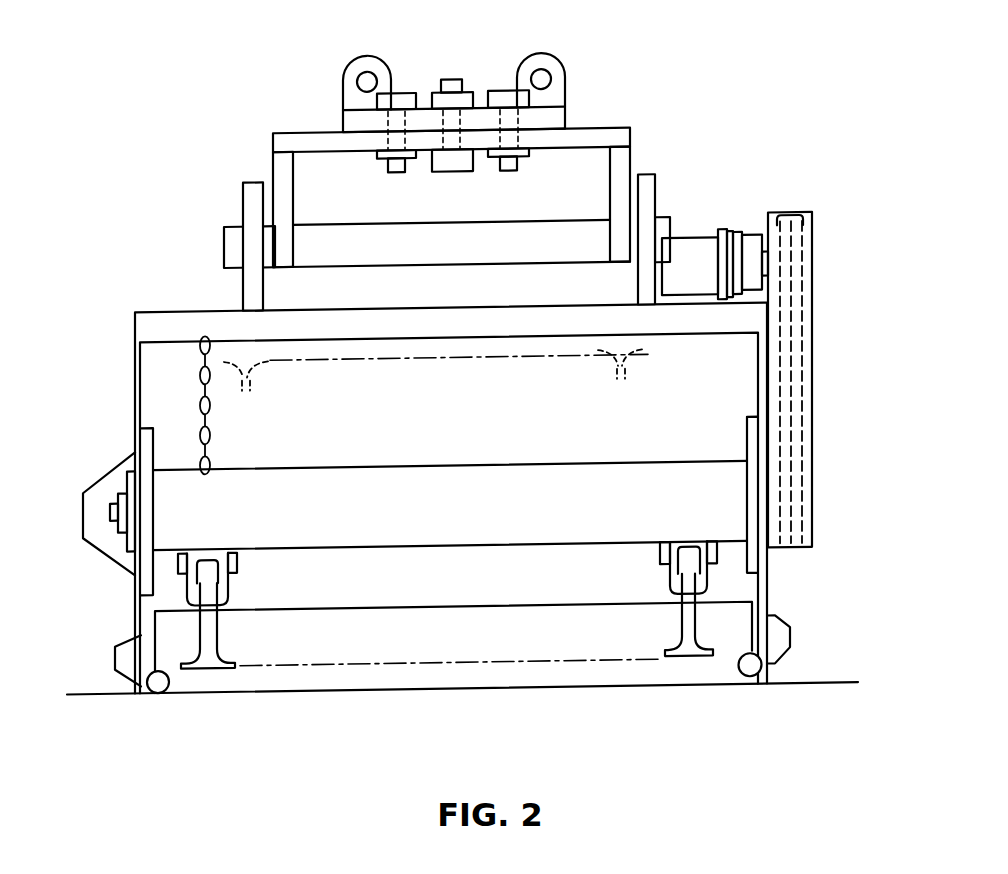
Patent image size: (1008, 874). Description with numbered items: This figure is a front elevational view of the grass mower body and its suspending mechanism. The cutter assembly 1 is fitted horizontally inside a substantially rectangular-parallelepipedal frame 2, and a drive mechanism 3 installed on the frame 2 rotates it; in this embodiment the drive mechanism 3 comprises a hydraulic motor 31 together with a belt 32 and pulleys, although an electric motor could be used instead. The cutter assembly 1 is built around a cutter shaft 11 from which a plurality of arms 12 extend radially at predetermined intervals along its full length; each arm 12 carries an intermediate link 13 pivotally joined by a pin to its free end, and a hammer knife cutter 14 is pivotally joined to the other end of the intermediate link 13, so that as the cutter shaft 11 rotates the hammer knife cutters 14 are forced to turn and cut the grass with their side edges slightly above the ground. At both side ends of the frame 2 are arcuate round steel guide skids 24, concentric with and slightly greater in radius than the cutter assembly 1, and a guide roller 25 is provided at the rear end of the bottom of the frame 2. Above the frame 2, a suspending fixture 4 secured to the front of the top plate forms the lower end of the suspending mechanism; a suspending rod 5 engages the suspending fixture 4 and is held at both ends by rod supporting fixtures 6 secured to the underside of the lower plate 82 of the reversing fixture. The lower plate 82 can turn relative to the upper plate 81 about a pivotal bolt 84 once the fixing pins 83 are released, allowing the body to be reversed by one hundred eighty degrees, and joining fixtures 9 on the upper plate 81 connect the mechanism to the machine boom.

The cutter assembly 1 is at (180, 588).
The frame 2 is at (123, 371).
The drive mechanism 3 is at (822, 371).
The suspending fixture 4 is at (245, 290).
The suspending rod 5 is at (225, 232).
The rod supporting fixtures 6 is at (273, 161).
The joining fixtures 9 is at (565, 72).
The cutter shaft 11 is at (498, 536).
The arms 12 is at (237, 557).
The intermediate links 13 is at (228, 585).
The hammer knife cutter 14 is at (210, 628).
The guide skids 24 is at (167, 685).
The guide roller 25 is at (630, 649).
The hydraulic motor 31 is at (697, 242).
The belt 32 is at (803, 392).
The upper plate 81 is at (567, 120).
The lower plate 82 is at (623, 139).
The fixing pins 83 is at (397, 92).
The pivotal bolt 84 is at (455, 80).